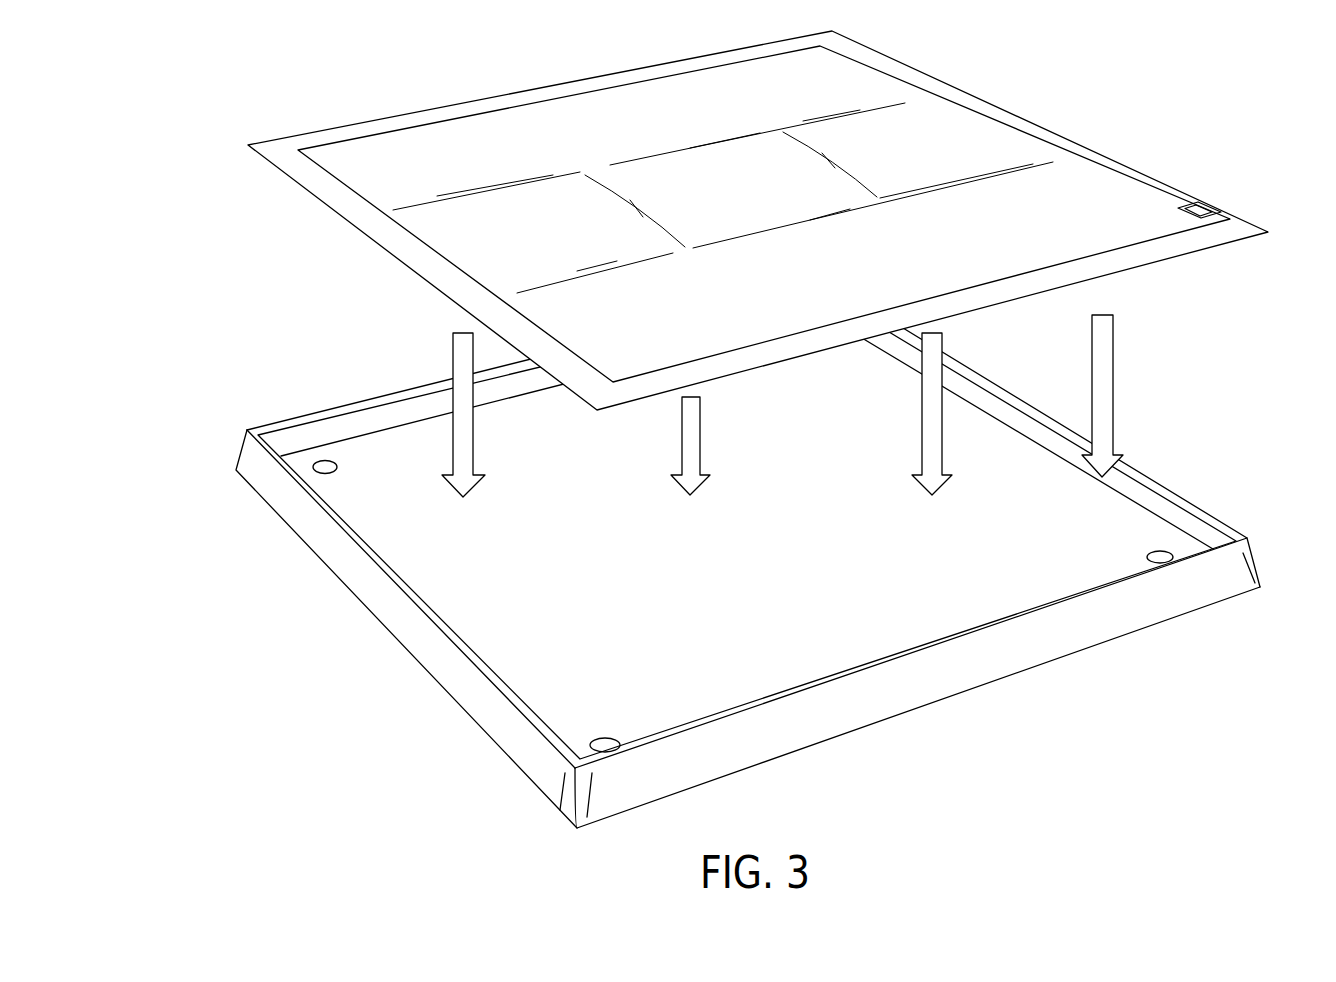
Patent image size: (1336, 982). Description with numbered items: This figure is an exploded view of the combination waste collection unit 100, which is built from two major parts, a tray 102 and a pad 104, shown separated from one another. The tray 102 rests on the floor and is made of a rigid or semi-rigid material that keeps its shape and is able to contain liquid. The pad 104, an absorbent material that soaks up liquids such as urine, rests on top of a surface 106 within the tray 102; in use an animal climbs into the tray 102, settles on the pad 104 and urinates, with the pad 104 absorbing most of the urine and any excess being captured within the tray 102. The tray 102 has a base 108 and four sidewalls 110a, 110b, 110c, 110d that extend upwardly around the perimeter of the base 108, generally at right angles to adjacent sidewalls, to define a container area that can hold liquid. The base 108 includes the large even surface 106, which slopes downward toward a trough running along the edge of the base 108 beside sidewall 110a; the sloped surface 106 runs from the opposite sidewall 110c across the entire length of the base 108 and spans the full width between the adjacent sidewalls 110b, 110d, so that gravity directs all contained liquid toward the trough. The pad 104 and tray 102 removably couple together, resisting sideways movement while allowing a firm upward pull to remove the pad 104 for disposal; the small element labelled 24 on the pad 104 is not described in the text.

The combination waste collection unit 100 is at (180, 341).
The tray 102 is at (950, 613).
The pad 104 is at (1042, 170).
The surface 106 is at (988, 448).
The base 108 is at (412, 550).
The sidewall 110a is at (477, 712).
The sidewall 110b is at (413, 403).
The sidewall 110c is at (1212, 510).
The sidewall 110d is at (883, 703).
The sensor 24 is at (1208, 211).